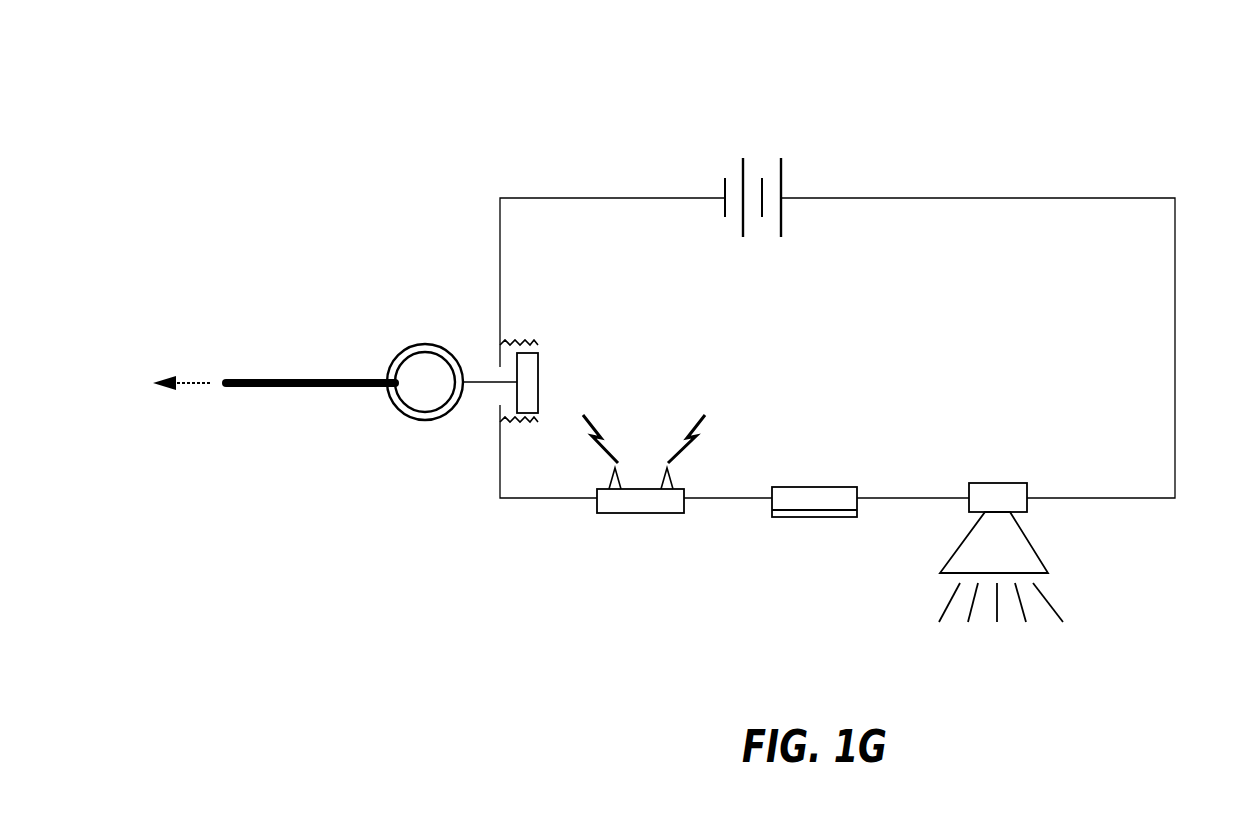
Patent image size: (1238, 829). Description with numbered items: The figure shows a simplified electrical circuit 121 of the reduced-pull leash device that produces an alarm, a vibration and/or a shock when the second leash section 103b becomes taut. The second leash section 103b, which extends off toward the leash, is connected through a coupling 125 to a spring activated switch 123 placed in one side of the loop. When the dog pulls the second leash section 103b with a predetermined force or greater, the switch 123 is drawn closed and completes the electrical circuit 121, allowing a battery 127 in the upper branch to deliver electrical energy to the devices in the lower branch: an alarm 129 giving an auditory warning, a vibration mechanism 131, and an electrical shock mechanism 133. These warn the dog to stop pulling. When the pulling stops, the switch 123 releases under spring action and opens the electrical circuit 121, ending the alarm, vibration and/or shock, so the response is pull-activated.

The second leash section 103b is at (313, 380).
The electrical circuit 121 is at (1058, 122).
The spring activated switch 123 is at (527, 383).
The coupling 125 is at (422, 420).
The battery 127 is at (775, 122).
The alarm 129 is at (1022, 532).
The vibration mechanism 131 is at (817, 497).
The electrical shock mechanism 133 is at (632, 513).